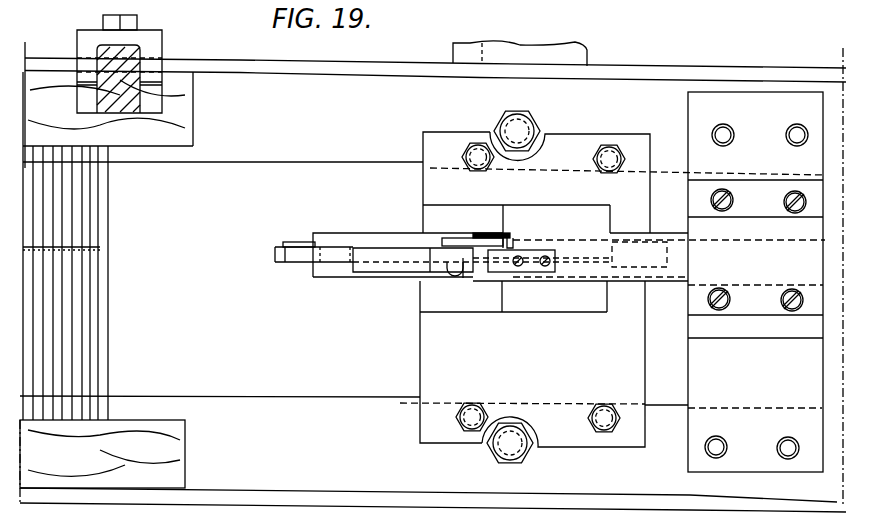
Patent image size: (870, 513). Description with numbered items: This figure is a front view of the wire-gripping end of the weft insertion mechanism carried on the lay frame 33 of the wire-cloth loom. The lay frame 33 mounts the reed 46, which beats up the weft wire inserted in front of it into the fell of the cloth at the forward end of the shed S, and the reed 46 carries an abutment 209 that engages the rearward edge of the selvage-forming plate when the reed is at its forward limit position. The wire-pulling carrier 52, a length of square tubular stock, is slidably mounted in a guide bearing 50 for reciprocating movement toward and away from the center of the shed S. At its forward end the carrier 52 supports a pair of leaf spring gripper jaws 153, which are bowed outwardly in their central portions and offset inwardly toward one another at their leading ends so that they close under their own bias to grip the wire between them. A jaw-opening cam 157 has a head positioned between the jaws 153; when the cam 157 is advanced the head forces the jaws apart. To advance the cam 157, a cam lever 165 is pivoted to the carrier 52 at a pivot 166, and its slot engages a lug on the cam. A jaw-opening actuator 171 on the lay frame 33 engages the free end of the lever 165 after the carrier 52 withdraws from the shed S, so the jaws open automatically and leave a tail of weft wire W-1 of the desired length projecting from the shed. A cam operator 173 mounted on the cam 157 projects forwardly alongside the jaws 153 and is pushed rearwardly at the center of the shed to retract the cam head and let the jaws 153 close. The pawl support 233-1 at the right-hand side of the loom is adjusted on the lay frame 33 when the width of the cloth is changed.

The pawl support 233-1 is at (143, 32).
The lay frame 33 is at (588, 52).
The guide bearing 50 is at (742, 222).
The wire-pulling carrier 52 is at (598, 227).
The pivot 166 is at (528, 236).
The cam lever 165 is at (452, 240).
The jaw-opening actuator 171 is at (331, 233).
The leaf spring gripper jaws 153 is at (296, 241).
The cam operator 173 is at (281, 258).
The jaw-opening cam 157 is at (463, 279).
The weft wire W-1 is at (100, 246).
The shed S is at (90, 248).
The abutment 209 is at (103, 290).
The reed 46 is at (86, 350).